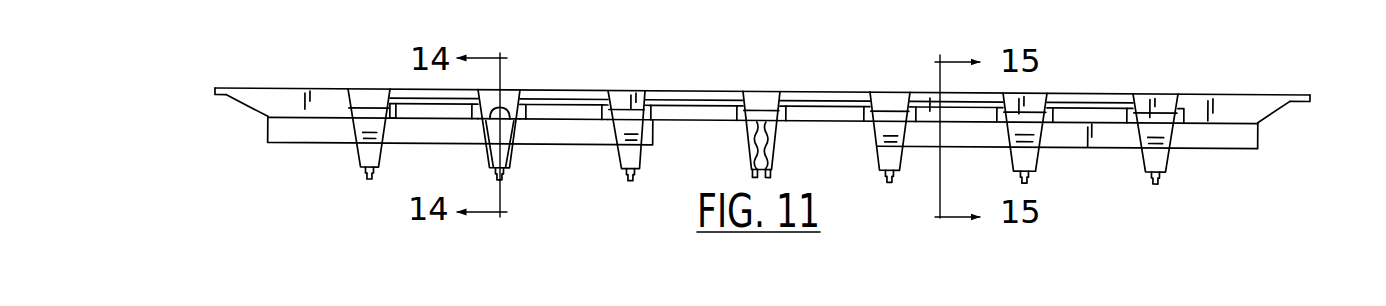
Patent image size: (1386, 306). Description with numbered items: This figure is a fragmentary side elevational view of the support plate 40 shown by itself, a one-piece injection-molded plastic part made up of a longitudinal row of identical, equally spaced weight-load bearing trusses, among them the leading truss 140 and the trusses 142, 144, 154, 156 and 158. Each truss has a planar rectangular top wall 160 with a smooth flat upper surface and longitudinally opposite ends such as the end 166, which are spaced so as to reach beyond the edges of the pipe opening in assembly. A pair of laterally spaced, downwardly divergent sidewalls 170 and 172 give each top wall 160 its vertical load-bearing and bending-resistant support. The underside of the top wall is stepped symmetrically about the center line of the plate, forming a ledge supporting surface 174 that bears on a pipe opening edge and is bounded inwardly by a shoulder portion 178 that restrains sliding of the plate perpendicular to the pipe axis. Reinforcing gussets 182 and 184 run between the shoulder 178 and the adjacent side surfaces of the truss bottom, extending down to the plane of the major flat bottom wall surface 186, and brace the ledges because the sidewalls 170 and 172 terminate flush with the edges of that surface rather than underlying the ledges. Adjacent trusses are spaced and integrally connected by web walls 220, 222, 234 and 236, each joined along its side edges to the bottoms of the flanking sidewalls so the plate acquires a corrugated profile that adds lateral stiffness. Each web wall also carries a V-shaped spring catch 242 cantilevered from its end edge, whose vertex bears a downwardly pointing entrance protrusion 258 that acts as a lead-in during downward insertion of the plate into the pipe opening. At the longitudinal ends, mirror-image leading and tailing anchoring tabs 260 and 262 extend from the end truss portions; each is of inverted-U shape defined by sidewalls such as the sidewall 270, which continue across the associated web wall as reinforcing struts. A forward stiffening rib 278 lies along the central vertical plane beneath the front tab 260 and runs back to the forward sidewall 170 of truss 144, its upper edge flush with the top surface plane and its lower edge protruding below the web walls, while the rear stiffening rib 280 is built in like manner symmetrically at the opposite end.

The support plate 40 is at (738, 86).
The truss 140 is at (401, 86).
The truss 142 is at (560, 86).
The truss 144 is at (695, 86).
The truss 154 is at (823, 91).
The truss 156 is at (920, 90).
The truss 158 is at (1101, 88).
The top wall 160 is at (391, 86).
The end of top wall 166 is at (437, 92).
The sidewall 170 is at (390, 100).
The sidewall 172 is at (505, 90).
The ledge supporting surface 174 is at (407, 123).
The shoulder portion 178 is at (552, 110).
The reinforcing gusset 182 is at (393, 112).
The reinforcing gusset 184 is at (468, 122).
The major flat bottom wall surface 186 is at (405, 127).
The web wall 220 is at (505, 172).
The web wall 222 is at (625, 102).
The web wall 234 is at (893, 117).
The web wall 236 is at (1033, 115).
The spring catch 242 is at (360, 160).
The entrance protrusion 258 is at (1157, 187).
The leading end anchoring tab 260 is at (222, 85).
The tailing end anchoring tab 262 is at (1274, 95).
The sidewall of end tab 270 is at (1225, 102).
The forward stiffening rib 278 is at (285, 127).
The rear stiffening rib 280 is at (265, 101).